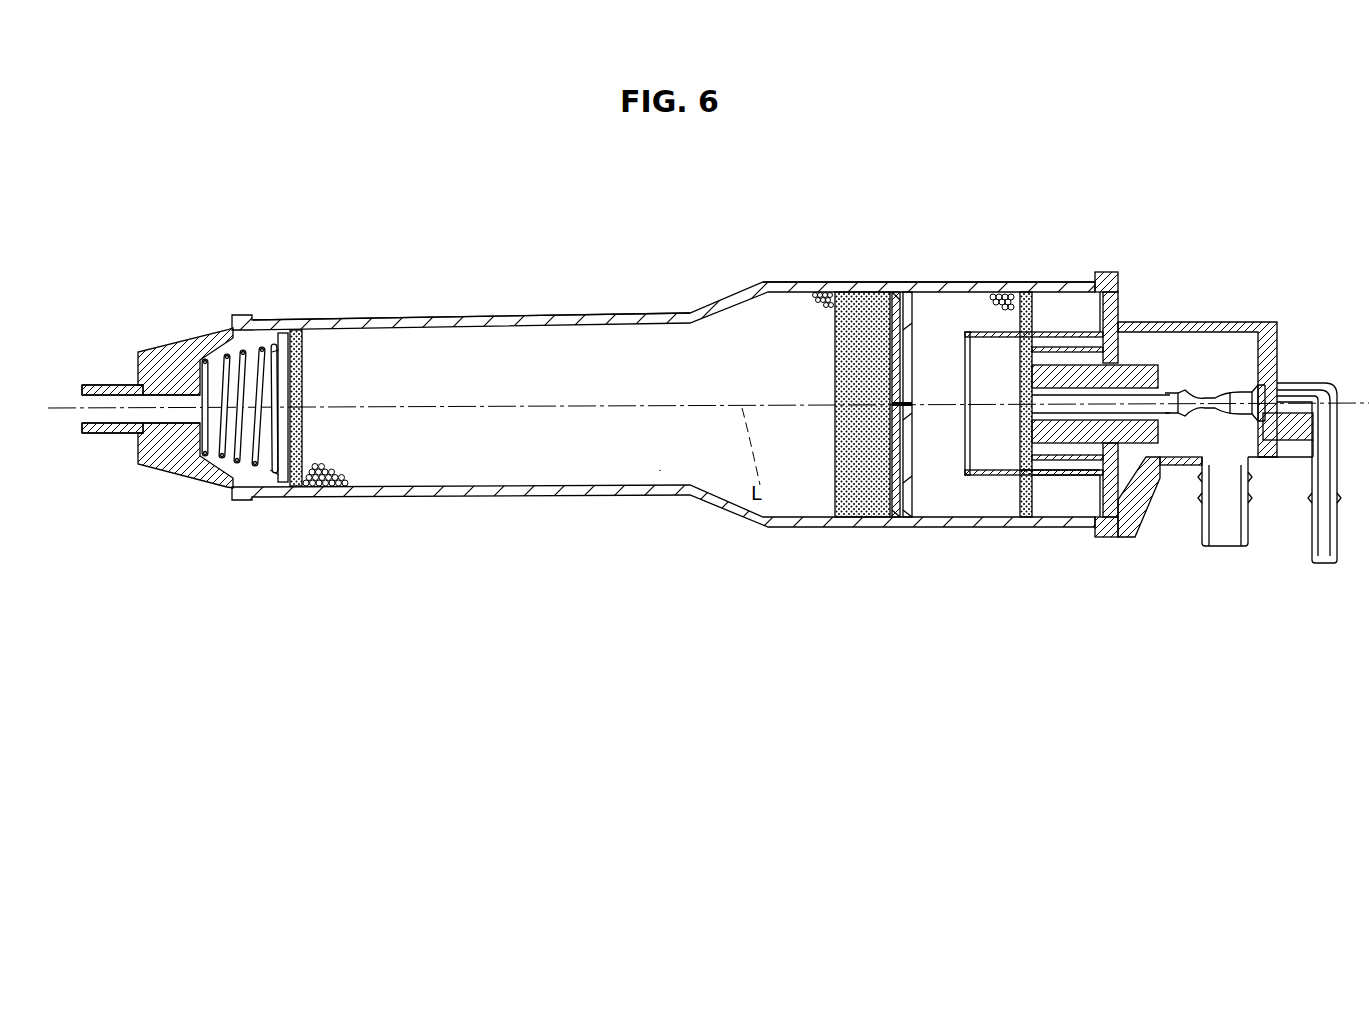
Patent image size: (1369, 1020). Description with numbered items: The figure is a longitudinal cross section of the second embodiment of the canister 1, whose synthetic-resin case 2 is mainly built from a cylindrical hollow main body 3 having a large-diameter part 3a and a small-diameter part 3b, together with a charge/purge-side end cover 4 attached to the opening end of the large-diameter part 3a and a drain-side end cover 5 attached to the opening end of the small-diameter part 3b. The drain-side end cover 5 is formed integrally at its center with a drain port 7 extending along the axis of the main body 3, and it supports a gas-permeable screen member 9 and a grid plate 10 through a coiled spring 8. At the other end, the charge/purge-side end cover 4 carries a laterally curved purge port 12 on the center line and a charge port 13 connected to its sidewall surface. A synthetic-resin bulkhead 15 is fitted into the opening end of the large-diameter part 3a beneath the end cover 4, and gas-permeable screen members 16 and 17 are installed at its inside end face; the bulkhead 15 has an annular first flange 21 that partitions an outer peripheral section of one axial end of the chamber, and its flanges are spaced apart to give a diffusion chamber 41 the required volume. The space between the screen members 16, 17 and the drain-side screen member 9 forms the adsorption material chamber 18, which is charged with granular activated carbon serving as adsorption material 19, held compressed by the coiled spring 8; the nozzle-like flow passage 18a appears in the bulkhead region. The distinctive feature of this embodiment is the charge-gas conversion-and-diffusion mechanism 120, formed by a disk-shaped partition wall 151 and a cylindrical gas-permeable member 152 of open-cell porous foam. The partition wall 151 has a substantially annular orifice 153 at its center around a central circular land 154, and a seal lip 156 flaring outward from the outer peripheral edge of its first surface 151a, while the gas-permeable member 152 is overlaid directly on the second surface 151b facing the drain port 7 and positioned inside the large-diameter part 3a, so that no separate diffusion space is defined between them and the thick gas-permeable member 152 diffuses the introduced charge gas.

The canister 1 is at (712, 257).
The case 2 is at (610, 305).
The main body 3 is at (663, 376).
The large-diameter part 3a is at (796, 289).
The small-diameter part 3b is at (395, 321).
The charge/purge-side end cover 4 is at (1222, 322).
The drain-side end cover 5 is at (176, 348).
The drain port 7 is at (108, 392).
The coiled spring 8 is at (222, 458).
The screen member 9 is at (304, 358).
The grid plate 10 is at (282, 335).
The purge port 12 is at (1322, 557).
The charge port 13 is at (1225, 542).
The bulkhead 15 is at (1145, 367).
The screen member 16 is at (1027, 518).
The screen member 17 is at (1020, 376).
The adsorption material chamber 18 is at (659, 470).
The nozzle flow path 18a is at (938, 318).
The adsorption material 19 is at (345, 480).
The first flange 21 is at (1052, 512).
The diffusion chamber 41 is at (1082, 500).
The charge-gas conversion-and-diffusion mechanism 120 is at (922, 408).
The partition wall 151 is at (923, 430).
The first surface 151a is at (908, 520).
The second surface 151b is at (895, 511).
The gas-permeable member 152 is at (862, 292).
The orifice 153 is at (906, 416).
The central circular land 154 is at (911, 421).
The seal lip 156 is at (912, 518).